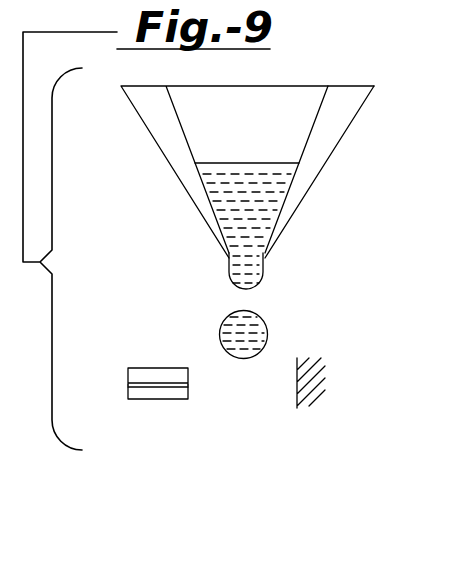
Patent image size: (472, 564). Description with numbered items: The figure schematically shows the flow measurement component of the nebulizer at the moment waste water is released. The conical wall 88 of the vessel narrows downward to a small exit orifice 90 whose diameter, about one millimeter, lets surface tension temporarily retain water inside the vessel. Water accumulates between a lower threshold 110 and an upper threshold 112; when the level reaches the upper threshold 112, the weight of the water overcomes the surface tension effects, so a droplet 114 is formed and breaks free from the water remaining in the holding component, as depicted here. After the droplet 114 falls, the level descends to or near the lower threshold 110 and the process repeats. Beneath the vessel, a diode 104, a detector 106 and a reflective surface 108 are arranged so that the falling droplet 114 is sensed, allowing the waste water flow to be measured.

The conical wall 88 is at (128, 102).
The exit orifice 90 is at (215, 255).
The diode 104 is at (157, 368).
The detector 106 is at (152, 399).
The reflective surface 108 is at (297, 383).
The lower threshold 110 is at (347, 163).
The upper threshold 112 is at (380, 105).
The droplet 114 is at (268, 322).